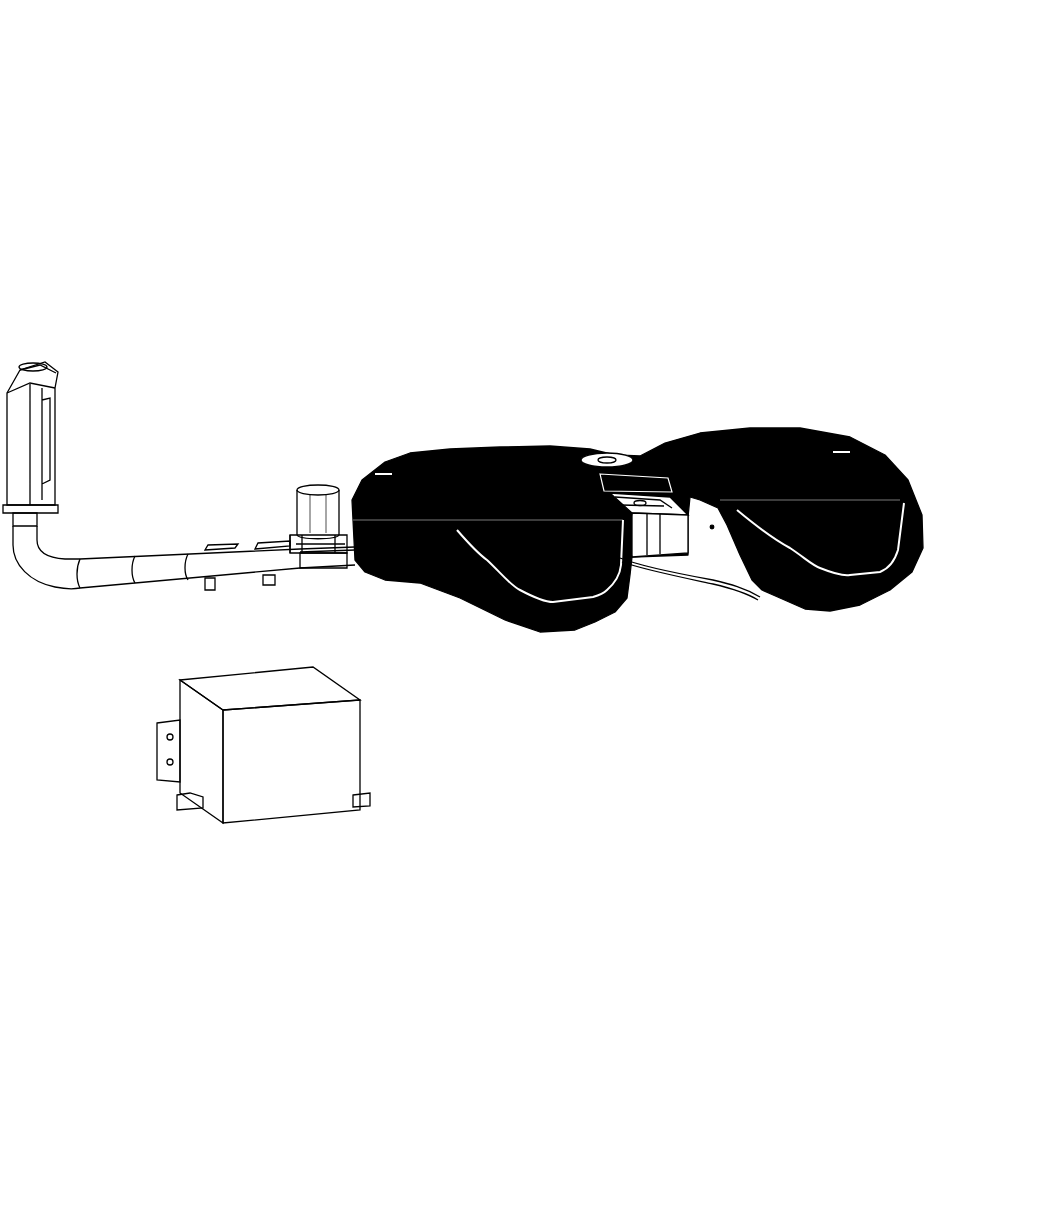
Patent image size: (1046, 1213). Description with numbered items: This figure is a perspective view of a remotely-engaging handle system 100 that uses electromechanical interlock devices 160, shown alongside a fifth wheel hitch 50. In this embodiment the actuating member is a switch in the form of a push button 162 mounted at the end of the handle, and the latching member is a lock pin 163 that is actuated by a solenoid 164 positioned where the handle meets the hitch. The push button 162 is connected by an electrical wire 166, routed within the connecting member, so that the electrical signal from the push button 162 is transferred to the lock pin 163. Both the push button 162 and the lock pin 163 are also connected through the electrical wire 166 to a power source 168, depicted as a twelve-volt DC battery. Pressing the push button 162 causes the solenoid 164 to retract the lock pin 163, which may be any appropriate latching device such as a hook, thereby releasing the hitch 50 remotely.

The remotely-engaging handle system 100 is at (111, 66).
The fifth wheel hitch 50 is at (813, 245).
The electromechanical interlock devices 160 is at (322, 272).
The push button 162 is at (35, 370).
The lock pin 163 is at (323, 553).
The solenoid 164 is at (315, 488).
The electrical wire 166 is at (103, 562).
The power source 168 is at (262, 814).